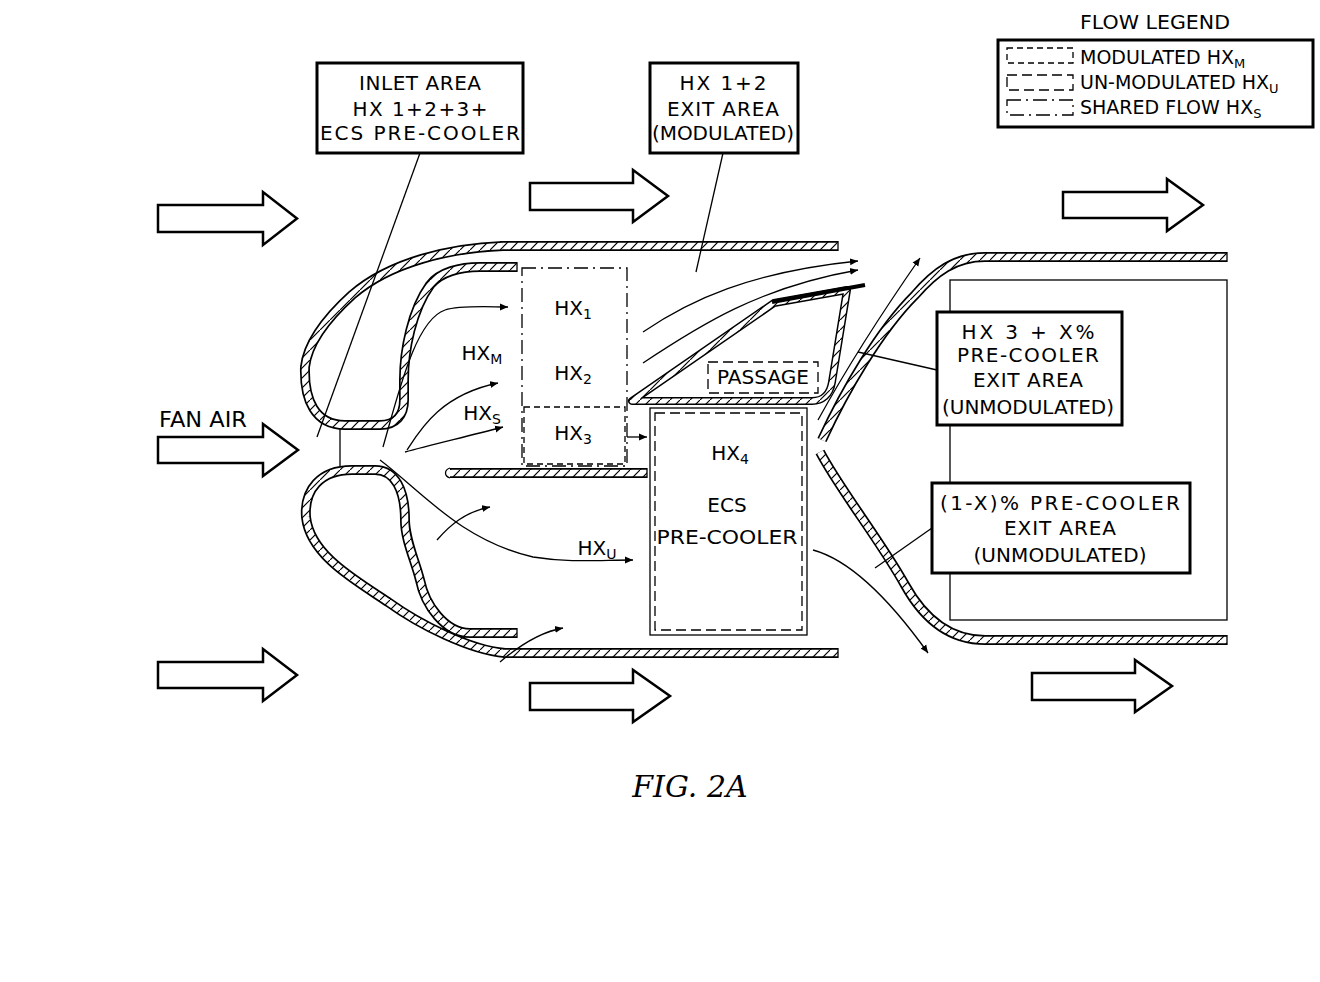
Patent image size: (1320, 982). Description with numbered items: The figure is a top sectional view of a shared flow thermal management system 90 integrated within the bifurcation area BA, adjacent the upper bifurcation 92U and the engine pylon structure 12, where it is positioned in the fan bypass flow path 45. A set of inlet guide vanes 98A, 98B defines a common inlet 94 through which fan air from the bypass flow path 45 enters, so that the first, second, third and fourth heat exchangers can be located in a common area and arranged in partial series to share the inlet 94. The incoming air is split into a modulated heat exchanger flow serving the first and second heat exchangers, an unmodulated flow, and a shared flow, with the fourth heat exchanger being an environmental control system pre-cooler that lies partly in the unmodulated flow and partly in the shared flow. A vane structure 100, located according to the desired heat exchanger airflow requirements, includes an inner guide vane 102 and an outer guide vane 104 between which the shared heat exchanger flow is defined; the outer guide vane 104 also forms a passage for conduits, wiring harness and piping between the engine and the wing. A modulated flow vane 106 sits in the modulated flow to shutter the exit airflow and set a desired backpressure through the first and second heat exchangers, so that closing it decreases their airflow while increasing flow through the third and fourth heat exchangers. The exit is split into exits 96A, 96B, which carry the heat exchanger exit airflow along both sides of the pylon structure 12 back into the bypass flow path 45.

The bypass flow path 45 is at (195, 226).
The upper bifurcation 92U is at (830, 242).
The inlet guide vane 98A is at (325, 328).
The inlet guide vane 98B is at (327, 577).
The shared flow thermal management system 90 is at (517, 658).
The inlet 94 is at (307, 463).
The inner guide vane 102 is at (533, 480).
The vane structure 100 is at (451, 535).
The outer guide vane 104 is at (750, 342).
The modulated flow vane 106 is at (860, 287).
The heat exchanger exit 96A is at (945, 250).
The heat exchanger exit 96B is at (932, 657).
The bifurcation area BA is at (830, 660).
The engine pylon structure 12 is at (1178, 435).